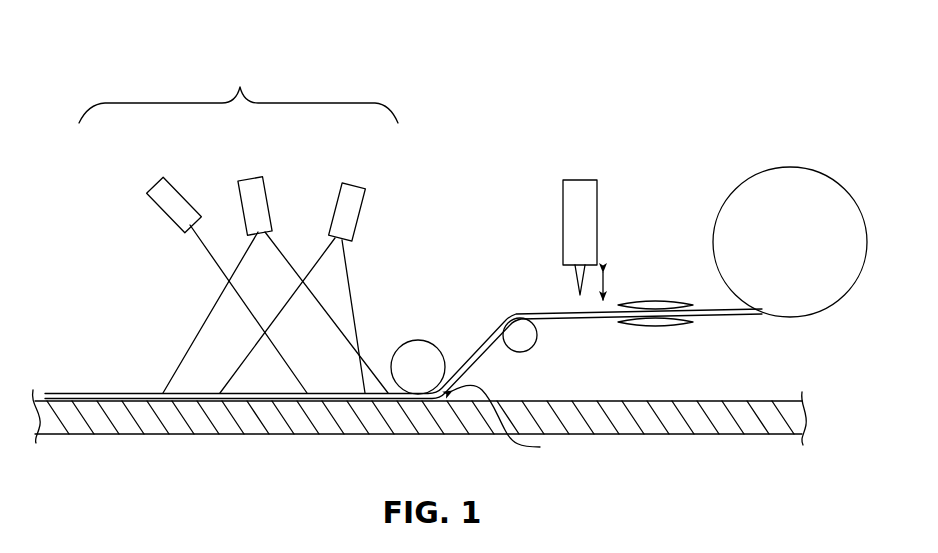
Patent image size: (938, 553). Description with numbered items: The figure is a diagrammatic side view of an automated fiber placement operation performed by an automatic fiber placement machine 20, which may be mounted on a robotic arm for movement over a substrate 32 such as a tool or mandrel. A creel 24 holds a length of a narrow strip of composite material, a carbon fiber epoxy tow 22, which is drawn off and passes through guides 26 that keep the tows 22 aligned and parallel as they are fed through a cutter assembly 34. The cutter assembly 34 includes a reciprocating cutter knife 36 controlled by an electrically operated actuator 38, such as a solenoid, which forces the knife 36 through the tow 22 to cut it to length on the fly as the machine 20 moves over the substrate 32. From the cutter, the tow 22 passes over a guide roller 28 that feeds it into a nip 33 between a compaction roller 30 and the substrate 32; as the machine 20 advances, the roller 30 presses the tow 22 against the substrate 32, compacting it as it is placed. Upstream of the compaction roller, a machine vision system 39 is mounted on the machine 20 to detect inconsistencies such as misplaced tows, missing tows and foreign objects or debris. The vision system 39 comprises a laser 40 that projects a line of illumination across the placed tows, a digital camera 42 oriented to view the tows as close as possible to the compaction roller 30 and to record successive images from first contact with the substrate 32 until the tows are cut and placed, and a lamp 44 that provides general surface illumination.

The automatic fiber placement machine 20 is at (496, 61).
The tow 22 is at (740, 316).
The creel 24 is at (787, 188).
The guides 26 is at (640, 302).
The guide roller 28 is at (523, 337).
The compaction roller 30 is at (417, 357).
The substrate 32 is at (690, 425).
The nip 33 is at (511, 423).
The cutter assembly 34 is at (541, 212).
The cutter knife 36 is at (567, 270).
The actuator 38 is at (583, 188).
The machine vision system 39 is at (238, 91).
The laser 40 is at (175, 205).
The digital camera 42 is at (252, 187).
The lamp 44 is at (345, 213).